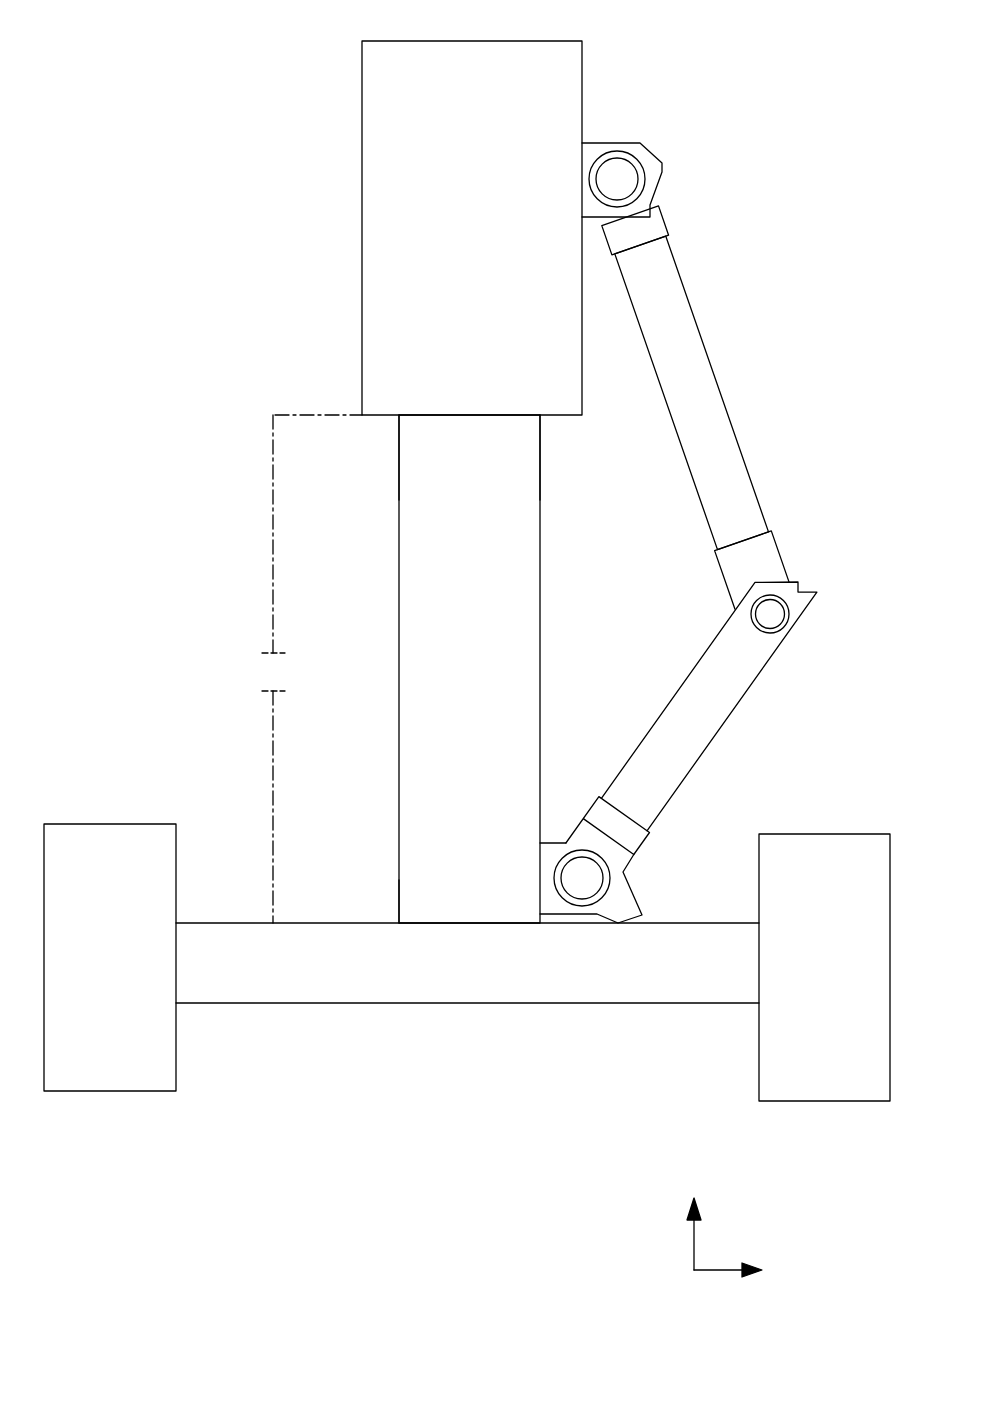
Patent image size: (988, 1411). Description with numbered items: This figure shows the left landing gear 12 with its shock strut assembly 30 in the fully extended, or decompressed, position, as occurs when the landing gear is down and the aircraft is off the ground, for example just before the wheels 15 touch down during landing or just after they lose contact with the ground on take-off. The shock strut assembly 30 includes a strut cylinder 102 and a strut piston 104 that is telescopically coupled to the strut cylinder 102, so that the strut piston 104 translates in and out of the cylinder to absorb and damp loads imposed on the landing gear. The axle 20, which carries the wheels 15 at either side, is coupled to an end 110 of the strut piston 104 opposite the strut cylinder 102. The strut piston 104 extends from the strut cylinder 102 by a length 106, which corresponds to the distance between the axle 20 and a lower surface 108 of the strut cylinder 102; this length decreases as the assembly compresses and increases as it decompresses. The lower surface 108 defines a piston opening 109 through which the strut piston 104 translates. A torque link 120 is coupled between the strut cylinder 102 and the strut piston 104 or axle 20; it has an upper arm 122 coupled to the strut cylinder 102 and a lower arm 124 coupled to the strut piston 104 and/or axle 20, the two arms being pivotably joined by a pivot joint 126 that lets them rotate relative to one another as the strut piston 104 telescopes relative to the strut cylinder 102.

The left landing gear 12 is at (198, 110).
The wheels 15 is at (100, 980).
The axle 20 is at (458, 978).
The shock strut assembly 30 is at (280, 364).
The strut cylinder 102 is at (456, 231).
The strut piston 104 is at (456, 653).
The length 106 is at (311, 669).
The lower surface 108 is at (562, 418).
The piston opening 109 is at (399, 417).
The end 110 is at (417, 917).
The torque link 120 is at (793, 456).
The upper arm 122 is at (702, 388).
The lower arm 124 is at (740, 668).
The pivot joint 126 is at (773, 613).